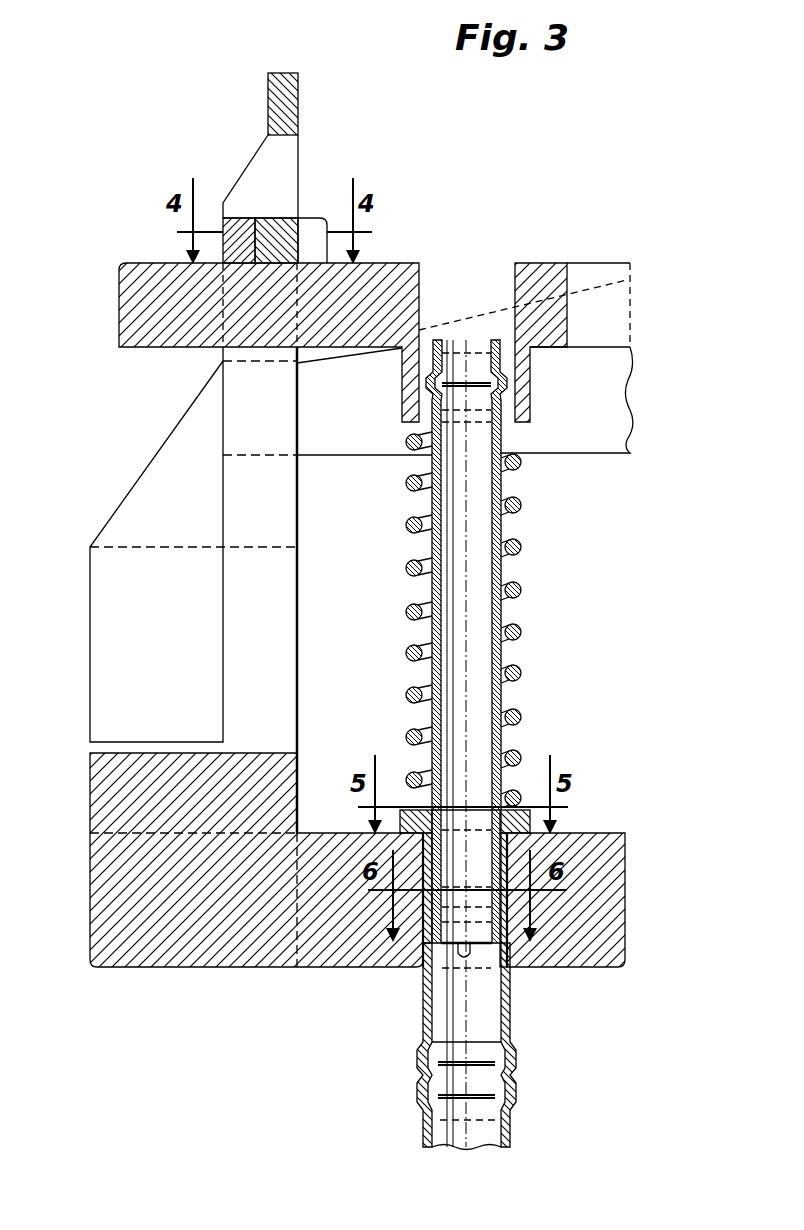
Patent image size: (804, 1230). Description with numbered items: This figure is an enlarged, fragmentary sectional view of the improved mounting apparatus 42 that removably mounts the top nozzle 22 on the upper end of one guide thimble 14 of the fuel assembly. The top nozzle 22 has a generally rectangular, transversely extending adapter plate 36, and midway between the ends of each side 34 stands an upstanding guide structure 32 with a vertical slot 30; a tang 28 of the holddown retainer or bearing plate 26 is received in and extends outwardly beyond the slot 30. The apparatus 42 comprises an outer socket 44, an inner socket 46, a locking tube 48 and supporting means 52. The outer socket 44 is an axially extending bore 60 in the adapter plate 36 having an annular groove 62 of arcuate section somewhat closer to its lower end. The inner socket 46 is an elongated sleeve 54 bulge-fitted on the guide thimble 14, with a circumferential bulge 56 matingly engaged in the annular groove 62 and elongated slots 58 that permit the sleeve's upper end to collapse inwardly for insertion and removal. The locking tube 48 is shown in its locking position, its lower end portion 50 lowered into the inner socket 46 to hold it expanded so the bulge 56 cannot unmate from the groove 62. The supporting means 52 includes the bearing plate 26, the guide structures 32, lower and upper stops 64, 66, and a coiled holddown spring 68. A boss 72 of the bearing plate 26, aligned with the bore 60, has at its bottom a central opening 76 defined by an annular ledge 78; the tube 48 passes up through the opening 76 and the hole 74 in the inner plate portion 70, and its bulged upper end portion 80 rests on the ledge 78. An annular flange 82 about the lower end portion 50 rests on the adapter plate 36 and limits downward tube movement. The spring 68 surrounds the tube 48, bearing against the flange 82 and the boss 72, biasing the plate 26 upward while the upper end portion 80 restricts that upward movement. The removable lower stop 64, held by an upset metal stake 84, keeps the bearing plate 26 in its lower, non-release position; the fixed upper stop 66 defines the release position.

The guide thimble 14 is at (501, 1135).
The top nozzle 22 is at (82, 905).
The bearing plate 26 is at (584, 258).
The tang 28 is at (119, 318).
The vertical slot 30 is at (215, 354).
The guide structure 32 is at (298, 150).
The side 34 is at (297, 765).
The adapter plate 36 is at (200, 972).
The mounting apparatus 42 is at (626, 547).
The outer socket 44 is at (523, 845).
The inner socket 46 is at (511, 985).
The locking tube 48 is at (503, 617).
The lower end portion 50 is at (466, 958).
The supporting means 52 is at (112, 214).
The sleeve 54 is at (423, 1020).
The circumferential bulge 56 is at (509, 942).
The elongated slot 58 is at (464, 965).
The bore 60 is at (406, 807).
The annular groove 62 is at (418, 930).
The lower stop 64 is at (286, 218).
The upper stop 66 is at (270, 93).
The holddown spring 68 is at (519, 672).
The inner plate portion 70 is at (524, 263).
The boss 72 is at (527, 383).
The hole 74 is at (418, 263).
The central opening 76 is at (504, 436).
The annular ledge 78 is at (412, 425).
The upper end portion 80 is at (477, 348).
The annular flange 82 is at (525, 807).
The upset metal stake 84 is at (312, 218).